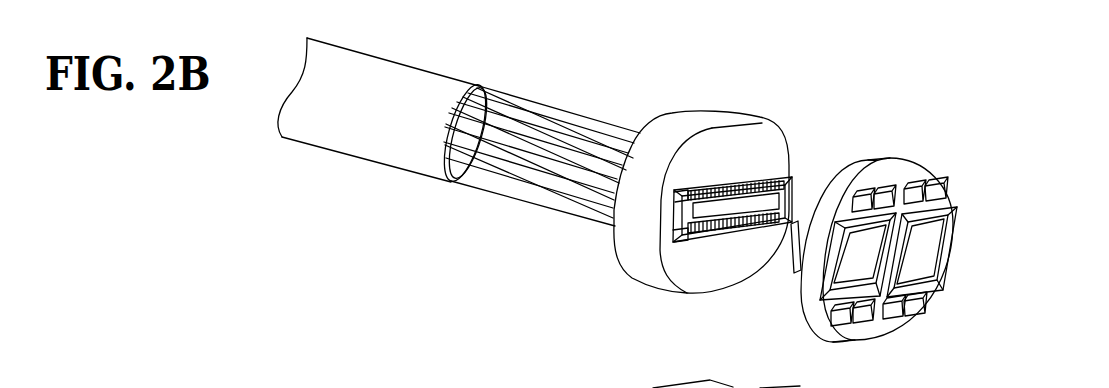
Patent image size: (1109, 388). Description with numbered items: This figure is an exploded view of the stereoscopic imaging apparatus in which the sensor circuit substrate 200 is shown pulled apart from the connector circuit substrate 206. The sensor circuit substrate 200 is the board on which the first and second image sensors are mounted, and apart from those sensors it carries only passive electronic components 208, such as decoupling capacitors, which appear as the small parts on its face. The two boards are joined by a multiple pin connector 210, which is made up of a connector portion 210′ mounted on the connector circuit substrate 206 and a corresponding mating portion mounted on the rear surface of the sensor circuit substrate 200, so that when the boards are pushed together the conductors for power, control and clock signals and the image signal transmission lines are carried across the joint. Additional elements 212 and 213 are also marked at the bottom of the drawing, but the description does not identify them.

The sensor circuit substrate 200 is at (917, 177).
The connector circuit substrate 206 is at (712, 113).
The passive electronic components 208 is at (896, 310).
The multiple pin connector 210 is at (540, 227).
The connector portion 210′ is at (672, 237).
The component 212 is at (662, 376).
The component 213 is at (783, 383).